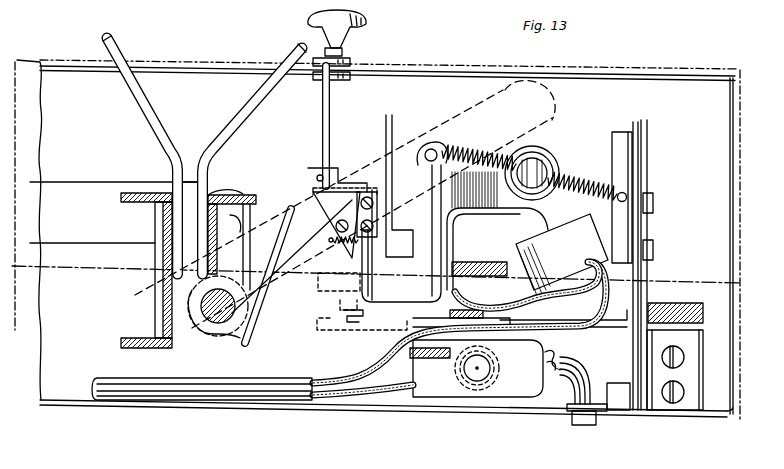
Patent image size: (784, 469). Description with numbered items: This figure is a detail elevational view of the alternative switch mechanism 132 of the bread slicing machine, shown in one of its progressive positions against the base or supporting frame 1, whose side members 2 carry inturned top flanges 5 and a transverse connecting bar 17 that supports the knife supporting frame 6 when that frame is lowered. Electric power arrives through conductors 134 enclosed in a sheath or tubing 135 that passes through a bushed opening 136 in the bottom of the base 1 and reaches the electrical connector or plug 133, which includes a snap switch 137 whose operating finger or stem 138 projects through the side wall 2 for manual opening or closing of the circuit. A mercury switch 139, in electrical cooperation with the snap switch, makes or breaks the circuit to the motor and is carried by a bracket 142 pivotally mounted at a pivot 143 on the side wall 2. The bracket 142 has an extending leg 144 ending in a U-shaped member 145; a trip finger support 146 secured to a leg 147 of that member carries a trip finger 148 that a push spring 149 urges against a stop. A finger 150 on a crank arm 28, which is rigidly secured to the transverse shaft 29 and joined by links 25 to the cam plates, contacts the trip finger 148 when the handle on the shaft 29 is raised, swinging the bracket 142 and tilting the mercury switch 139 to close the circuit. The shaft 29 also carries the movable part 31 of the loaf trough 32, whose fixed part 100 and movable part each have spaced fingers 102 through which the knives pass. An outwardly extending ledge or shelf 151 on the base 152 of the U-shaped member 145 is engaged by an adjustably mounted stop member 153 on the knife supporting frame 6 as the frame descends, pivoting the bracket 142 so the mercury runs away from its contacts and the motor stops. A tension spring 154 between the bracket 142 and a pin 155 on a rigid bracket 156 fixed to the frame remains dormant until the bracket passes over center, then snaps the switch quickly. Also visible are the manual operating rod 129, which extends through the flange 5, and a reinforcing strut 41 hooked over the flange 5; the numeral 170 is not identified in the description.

The base or supporting frame 1 is at (80, 406).
The side members 2 is at (452, 81).
The inturned top flanges 5 is at (205, 65).
The knife supporting frame 6 is at (99, 280).
The transverse connecting bar 17 is at (707, 313).
The links 25 is at (102, 184).
The crank arms 28 is at (190, 229).
The transverse shaft 29 is at (215, 323).
The movable part of the loaf receiving platform 31 is at (268, 99).
The loaf receiving platform or trough 32 is at (190, 141).
The reinforcing strut 41 is at (330, 399).
The fixed part of the loaf support 100 is at (150, 117).
The fingers 102 is at (120, 44).
The rod 129 is at (336, 120).
The switch mechanism 132 is at (610, 121).
The electrical connector or plug 133 is at (517, 393).
The electrical conductors 134 is at (557, 357).
The sheath or tubing 135 is at (594, 377).
The bushed opening 136 is at (604, 428).
The electrical snap switch 137 is at (358, 39).
The operating finger or stem 138 is at (470, 376).
The mercury switch 139 is at (487, 248).
The bracket 142 is at (428, 147).
The pivot 143 is at (548, 157).
The extending leg 144 is at (480, 149).
The U-shaped member 145 is at (432, 224).
The trip finger support 146 is at (313, 195).
The leg of the U-shaped member 147 is at (368, 271).
The trip finger 148 is at (345, 204).
The push spring 149 is at (360, 271).
The finger 150 is at (268, 266).
The ledge or shelf 151 is at (350, 331).
The base of the U-shaped member 152 is at (367, 353).
The stop member 153 is at (330, 313).
The tension spring 154 is at (592, 178).
The pin 155 is at (627, 196).
The rigid bracket 156 is at (632, 165).
The terminal posts 170 is at (604, 285).